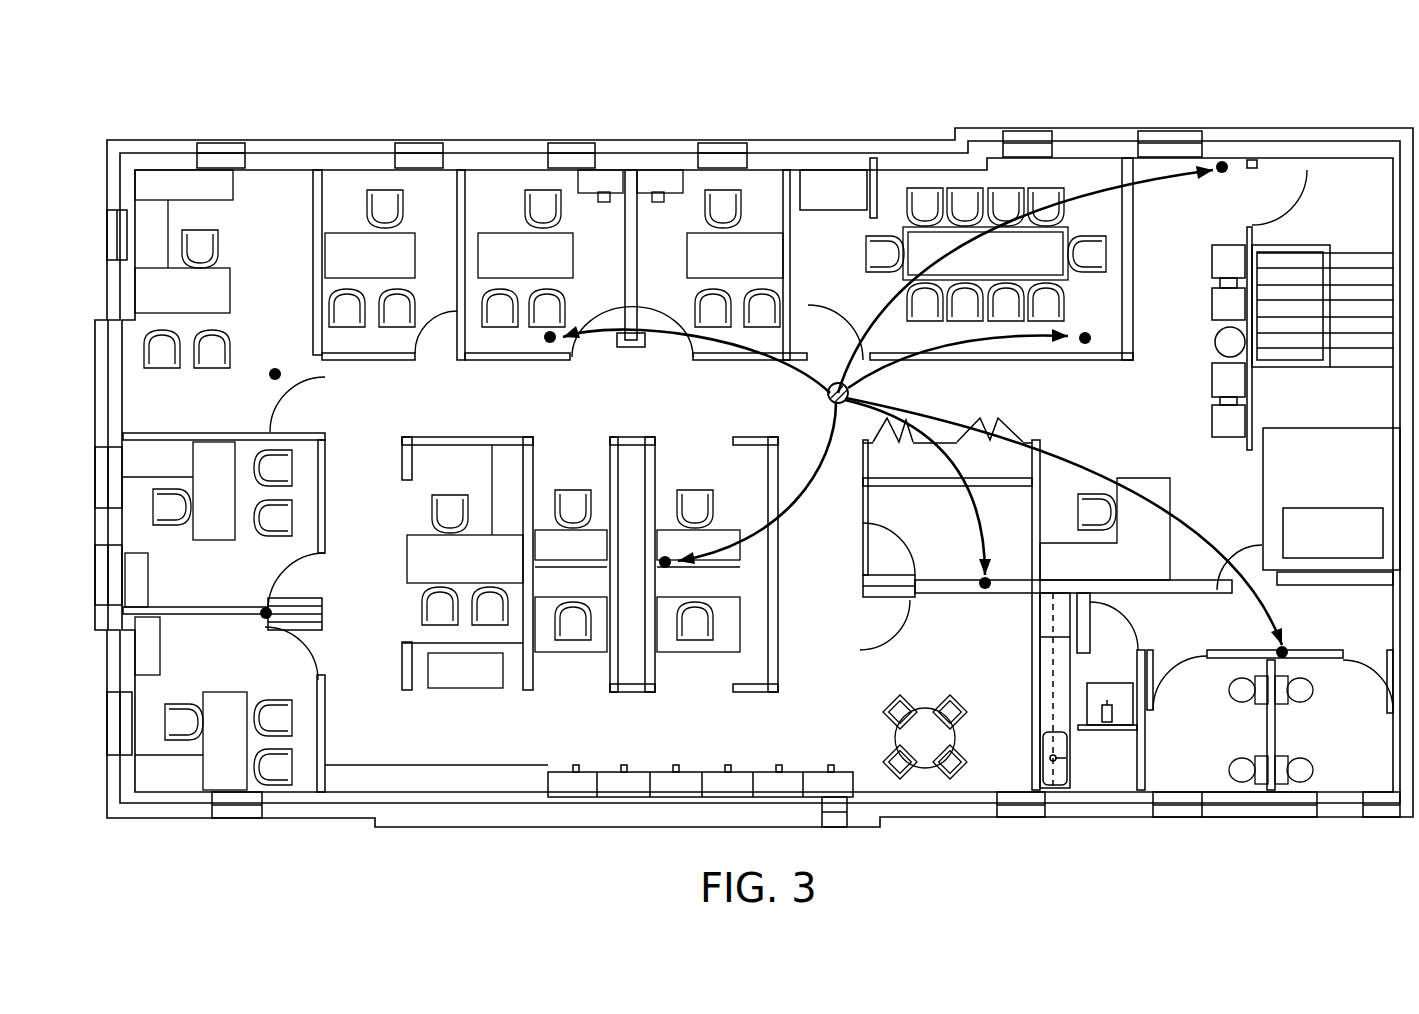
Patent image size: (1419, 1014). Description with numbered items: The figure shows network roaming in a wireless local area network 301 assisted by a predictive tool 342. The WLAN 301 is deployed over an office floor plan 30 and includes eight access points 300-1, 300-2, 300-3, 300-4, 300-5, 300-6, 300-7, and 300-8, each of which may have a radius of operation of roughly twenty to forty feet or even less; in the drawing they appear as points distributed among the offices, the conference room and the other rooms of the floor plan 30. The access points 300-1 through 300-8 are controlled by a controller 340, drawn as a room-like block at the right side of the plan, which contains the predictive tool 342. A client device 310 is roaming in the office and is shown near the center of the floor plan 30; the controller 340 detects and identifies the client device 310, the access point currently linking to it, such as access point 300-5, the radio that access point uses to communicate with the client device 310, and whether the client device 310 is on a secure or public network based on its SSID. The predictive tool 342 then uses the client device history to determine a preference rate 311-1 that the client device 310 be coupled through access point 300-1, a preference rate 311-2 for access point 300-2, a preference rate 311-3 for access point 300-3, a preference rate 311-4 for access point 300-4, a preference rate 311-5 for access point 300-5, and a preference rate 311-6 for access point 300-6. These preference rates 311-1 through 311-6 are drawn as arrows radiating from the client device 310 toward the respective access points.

The floor plan 30 is at (168, 86).
The access point 300-1 is at (1220, 175).
The access point 300-2 is at (1088, 344).
The access point 300-3 is at (1292, 645).
The access point 300-4 is at (983, 592).
The access point 300-5 is at (665, 567).
The access point 300-6 is at (548, 343).
The access point 300-7 is at (270, 620).
The access point 300-8 is at (273, 382).
The wireless local area network 301 is at (408, 414).
The client device 310 is at (826, 400).
The preference rate 311-1 is at (860, 318).
The preference rate 311-2 is at (922, 355).
The preference rate 311-3 is at (1072, 470).
The preference rate 311-4 is at (970, 500).
The preference rate 311-5 is at (812, 502).
The preference rate 311-6 is at (702, 348).
The controller 340 is at (1358, 470).
The predictive tool 342 is at (1358, 547).